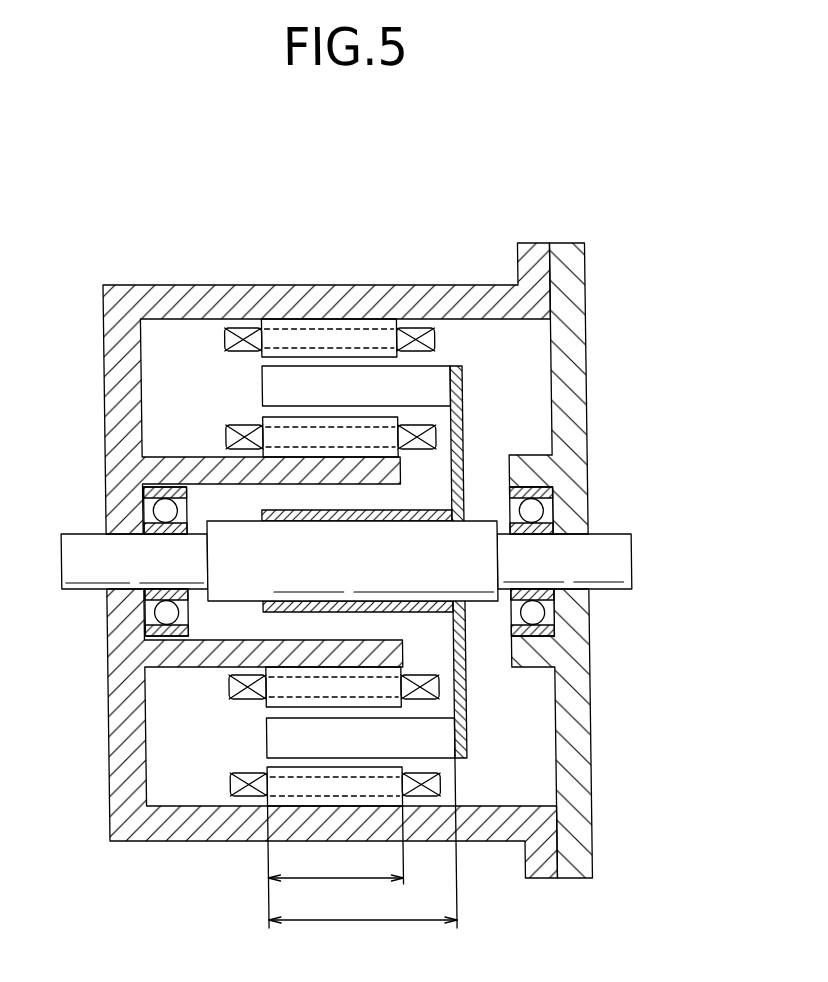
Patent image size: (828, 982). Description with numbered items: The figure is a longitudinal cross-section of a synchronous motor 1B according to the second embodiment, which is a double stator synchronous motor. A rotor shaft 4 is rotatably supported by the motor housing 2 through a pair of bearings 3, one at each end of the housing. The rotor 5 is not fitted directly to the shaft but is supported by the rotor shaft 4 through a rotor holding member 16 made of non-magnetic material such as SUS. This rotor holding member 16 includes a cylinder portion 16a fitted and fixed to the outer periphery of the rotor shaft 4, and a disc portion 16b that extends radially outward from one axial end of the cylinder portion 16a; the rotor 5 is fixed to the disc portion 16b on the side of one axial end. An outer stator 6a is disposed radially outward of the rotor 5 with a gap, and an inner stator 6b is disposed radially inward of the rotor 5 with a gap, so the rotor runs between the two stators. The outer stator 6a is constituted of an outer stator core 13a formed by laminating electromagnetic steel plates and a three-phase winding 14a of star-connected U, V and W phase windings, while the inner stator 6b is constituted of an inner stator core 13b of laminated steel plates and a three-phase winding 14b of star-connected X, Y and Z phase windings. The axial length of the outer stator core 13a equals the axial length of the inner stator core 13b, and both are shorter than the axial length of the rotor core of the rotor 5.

The synchronous motor 1B is at (533, 196).
The motor housing 2 is at (174, 297).
The bearings 3 is at (162, 613).
The rotor shaft 4 is at (607, 543).
The rotor 5 is at (371, 559).
The outer stator 6a is at (331, 482).
The inner stator 6b is at (342, 433).
The outer stator core 13a is at (309, 338).
The inner stator core 13b is at (366, 437).
The three-phase winding 14a is at (242, 338).
The three-phase winding 14b is at (413, 425).
The rotor holding member 16 is at (477, 559).
The cylinder portion 16a is at (418, 511).
The disc portion 16b is at (460, 406).